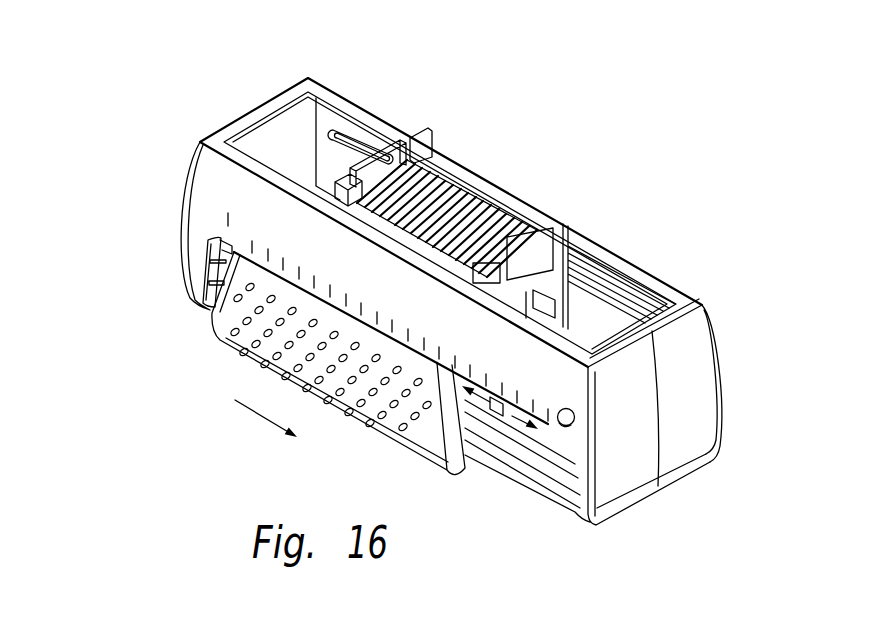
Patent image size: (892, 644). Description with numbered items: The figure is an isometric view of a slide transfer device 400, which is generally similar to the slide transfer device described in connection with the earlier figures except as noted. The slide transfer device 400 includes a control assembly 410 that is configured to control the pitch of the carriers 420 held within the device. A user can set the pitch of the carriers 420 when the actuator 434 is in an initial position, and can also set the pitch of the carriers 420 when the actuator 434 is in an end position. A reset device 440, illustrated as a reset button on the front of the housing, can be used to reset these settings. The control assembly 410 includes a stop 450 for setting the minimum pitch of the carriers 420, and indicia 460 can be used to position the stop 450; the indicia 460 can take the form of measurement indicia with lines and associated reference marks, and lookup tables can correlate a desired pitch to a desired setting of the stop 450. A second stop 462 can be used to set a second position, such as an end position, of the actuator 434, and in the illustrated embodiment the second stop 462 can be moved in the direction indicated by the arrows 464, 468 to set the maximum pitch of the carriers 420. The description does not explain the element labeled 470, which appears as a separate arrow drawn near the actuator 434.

The slide transfer device 400 is at (525, 172).
The carriers 420 is at (440, 152).
The indicia 460 is at (228, 207).
The control assembly 410 is at (206, 228).
The stop 450 is at (214, 250).
The actuator 434 is at (240, 355).
The direction arrow 470 is at (240, 405).
The second stop 462 is at (478, 436).
The arrow 464 is at (470, 398).
The arrow 468 is at (527, 424).
The reset device 440 is at (575, 436).